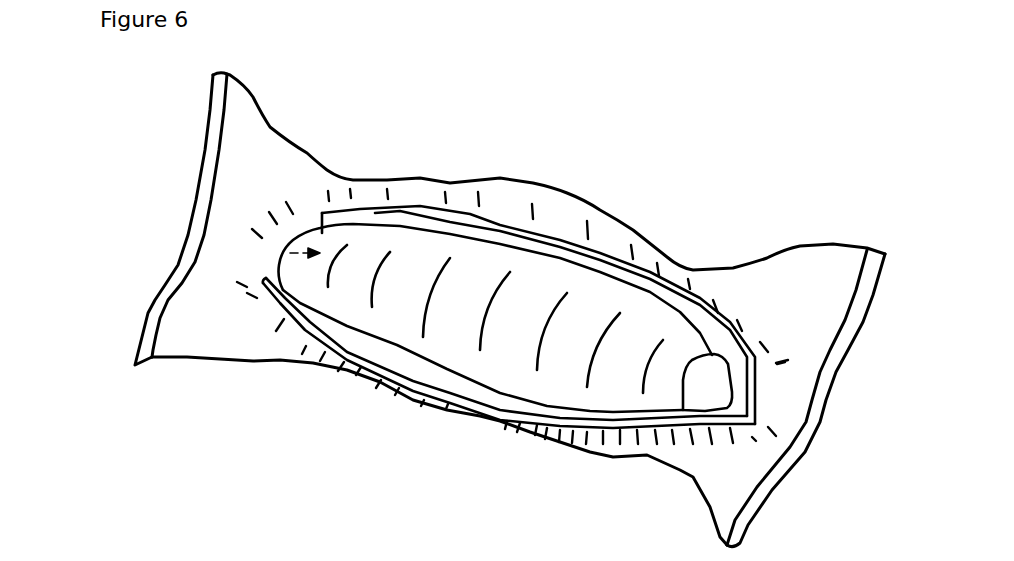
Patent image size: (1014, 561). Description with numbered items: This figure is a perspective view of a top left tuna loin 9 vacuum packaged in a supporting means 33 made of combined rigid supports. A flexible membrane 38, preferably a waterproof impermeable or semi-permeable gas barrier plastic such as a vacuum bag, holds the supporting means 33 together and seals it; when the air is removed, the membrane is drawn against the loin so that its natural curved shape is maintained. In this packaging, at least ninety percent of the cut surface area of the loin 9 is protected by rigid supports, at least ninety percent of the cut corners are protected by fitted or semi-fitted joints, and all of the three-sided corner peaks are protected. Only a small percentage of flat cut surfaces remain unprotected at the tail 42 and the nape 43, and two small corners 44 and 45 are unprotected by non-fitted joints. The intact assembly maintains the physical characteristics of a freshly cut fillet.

The flexible membrane 38 is at (253, 172).
The supporting means 33 is at (500, 147).
The tail 42 is at (280, 253).
The corner 44 is at (277, 270).
The top left tuna loin 9 is at (460, 320).
The nape 43 is at (707, 387).
The corner 45 is at (690, 378).